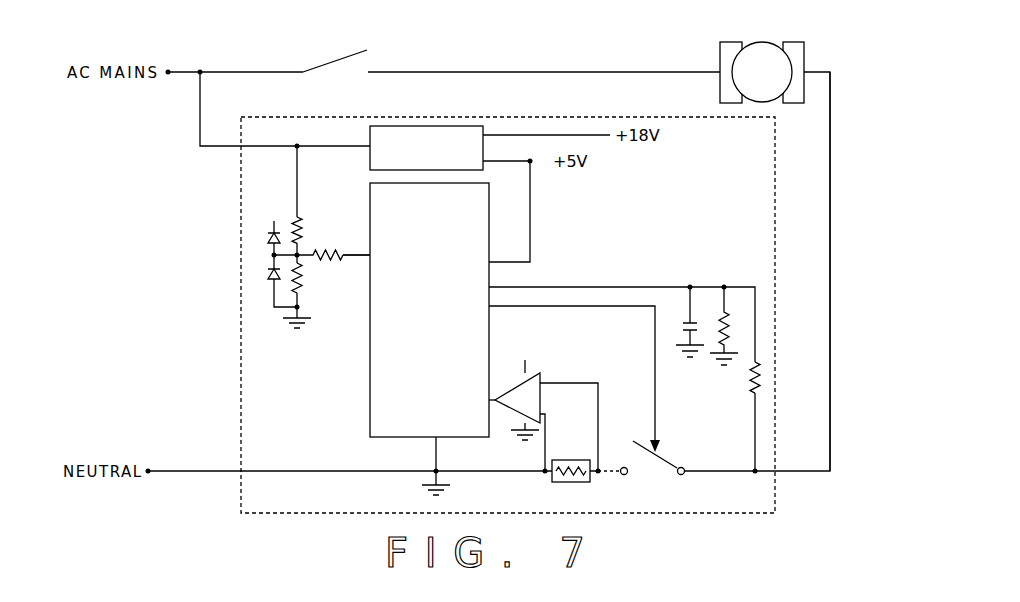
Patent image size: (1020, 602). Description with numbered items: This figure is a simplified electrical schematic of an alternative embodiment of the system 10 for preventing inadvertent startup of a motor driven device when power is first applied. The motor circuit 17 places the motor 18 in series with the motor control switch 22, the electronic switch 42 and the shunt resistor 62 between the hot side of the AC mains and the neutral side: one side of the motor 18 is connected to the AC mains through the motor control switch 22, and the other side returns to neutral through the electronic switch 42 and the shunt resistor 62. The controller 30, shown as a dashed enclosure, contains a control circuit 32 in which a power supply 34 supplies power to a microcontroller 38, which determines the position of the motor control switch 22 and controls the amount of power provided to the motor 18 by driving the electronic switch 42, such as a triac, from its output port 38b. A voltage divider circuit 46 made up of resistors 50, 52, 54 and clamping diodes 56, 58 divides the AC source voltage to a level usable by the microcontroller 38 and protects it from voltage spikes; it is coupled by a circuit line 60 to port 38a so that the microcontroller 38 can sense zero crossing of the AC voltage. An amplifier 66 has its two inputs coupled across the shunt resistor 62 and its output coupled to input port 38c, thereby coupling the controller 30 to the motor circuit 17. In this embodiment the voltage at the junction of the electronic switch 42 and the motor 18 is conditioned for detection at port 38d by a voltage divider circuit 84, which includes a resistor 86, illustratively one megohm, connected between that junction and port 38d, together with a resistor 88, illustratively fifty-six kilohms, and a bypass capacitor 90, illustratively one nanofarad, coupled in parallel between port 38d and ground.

The system 10 is at (484, 55).
The motor circuit 17 is at (840, 100).
The motor 18 is at (750, 42).
The motor control switch 22 is at (355, 54).
The controller 30 is at (240, 333).
The control circuit 32 is at (584, 221).
The power supply 34 is at (370, 162).
The microcontroller 38 is at (370, 386).
The port 38a is at (372, 255).
The output port 38b is at (489, 306).
The input port 38c is at (488, 400).
The port 38d is at (489, 287).
The electronic switch 42 is at (662, 455).
The voltage divider circuit 46 is at (325, 302).
The resistor 50 is at (301, 228).
The resistor 52 is at (302, 279).
The resistor 54 is at (325, 252).
The clamping diode 56 is at (266, 243).
The clamping diode 58 is at (266, 278).
The circuit line 60 is at (358, 258).
The shunt resistor 62 is at (556, 459).
The amplifier 66 is at (535, 372).
The voltage divider circuit 84 is at (718, 236).
The resistor 86 is at (760, 375).
The resistor 88 is at (728, 320).
The bypass capacitor 90 is at (682, 322).